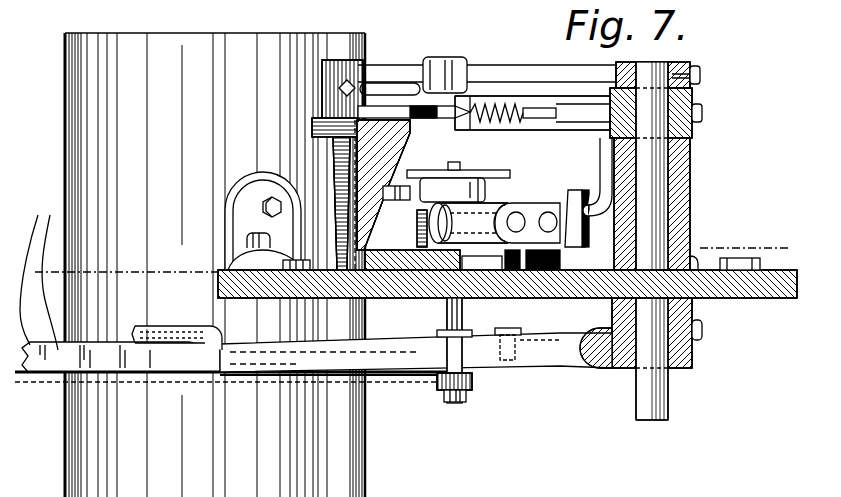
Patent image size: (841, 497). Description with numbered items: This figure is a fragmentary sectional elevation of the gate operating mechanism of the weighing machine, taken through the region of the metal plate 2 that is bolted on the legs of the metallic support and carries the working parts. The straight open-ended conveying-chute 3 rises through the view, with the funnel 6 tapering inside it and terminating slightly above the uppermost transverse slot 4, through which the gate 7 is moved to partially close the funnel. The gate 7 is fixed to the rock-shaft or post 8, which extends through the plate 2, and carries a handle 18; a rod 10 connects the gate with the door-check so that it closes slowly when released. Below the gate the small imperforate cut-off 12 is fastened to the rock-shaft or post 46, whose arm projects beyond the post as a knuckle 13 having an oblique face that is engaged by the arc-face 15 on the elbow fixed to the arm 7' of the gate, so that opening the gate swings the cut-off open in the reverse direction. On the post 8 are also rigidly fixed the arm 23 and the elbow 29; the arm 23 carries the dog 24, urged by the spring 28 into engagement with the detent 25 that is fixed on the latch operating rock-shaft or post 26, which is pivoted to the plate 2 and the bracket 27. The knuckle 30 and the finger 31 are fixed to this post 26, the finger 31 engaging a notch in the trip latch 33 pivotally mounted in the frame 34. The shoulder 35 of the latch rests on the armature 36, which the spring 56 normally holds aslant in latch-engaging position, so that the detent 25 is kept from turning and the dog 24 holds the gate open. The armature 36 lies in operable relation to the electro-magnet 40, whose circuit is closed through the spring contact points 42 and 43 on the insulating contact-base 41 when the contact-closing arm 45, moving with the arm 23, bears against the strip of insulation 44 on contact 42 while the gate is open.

The metal plate 2 is at (748, 258).
The conveying-chute 3 is at (215, 265).
The transverse slot 4 is at (70, 378).
The funnel 6 is at (102, 262).
The gate 7 is at (416, 374).
The arm of the gate 7' is at (511, 388).
The rock-shaft or post 8 is at (640, 395).
The rod 10 is at (175, 325).
The cut-off 12 is at (410, 380).
The knuckle 13 is at (508, 330).
The arc-face 15 is at (575, 315).
The handle 18 is at (39, 274).
The arm 23 is at (612, 180).
The dog 24 is at (432, 119).
The detent 25 is at (312, 122).
The latch operating rock-shaft or post 26 is at (310, 70).
The bracket 27 is at (395, 132).
The spring 28 is at (512, 100).
The elbow 29 is at (598, 62).
The knuckle 30 is at (385, 64).
The finger 31 is at (385, 215).
The trip latch 33 is at (458, 182).
The frame 34 is at (615, 195).
The shoulder 35 is at (500, 205).
The armature 36 is at (420, 230).
The electro-magnet 40 is at (535, 215).
The contact-base 41 is at (511, 260).
The spring contact point 42 is at (640, 165).
The spring contact point 43 is at (680, 228).
The strip of insulation 44 is at (690, 185).
The contact-closing arm 45 is at (545, 75).
The rock-shaft or post 46 is at (438, 320).
The spring 56 is at (425, 261).